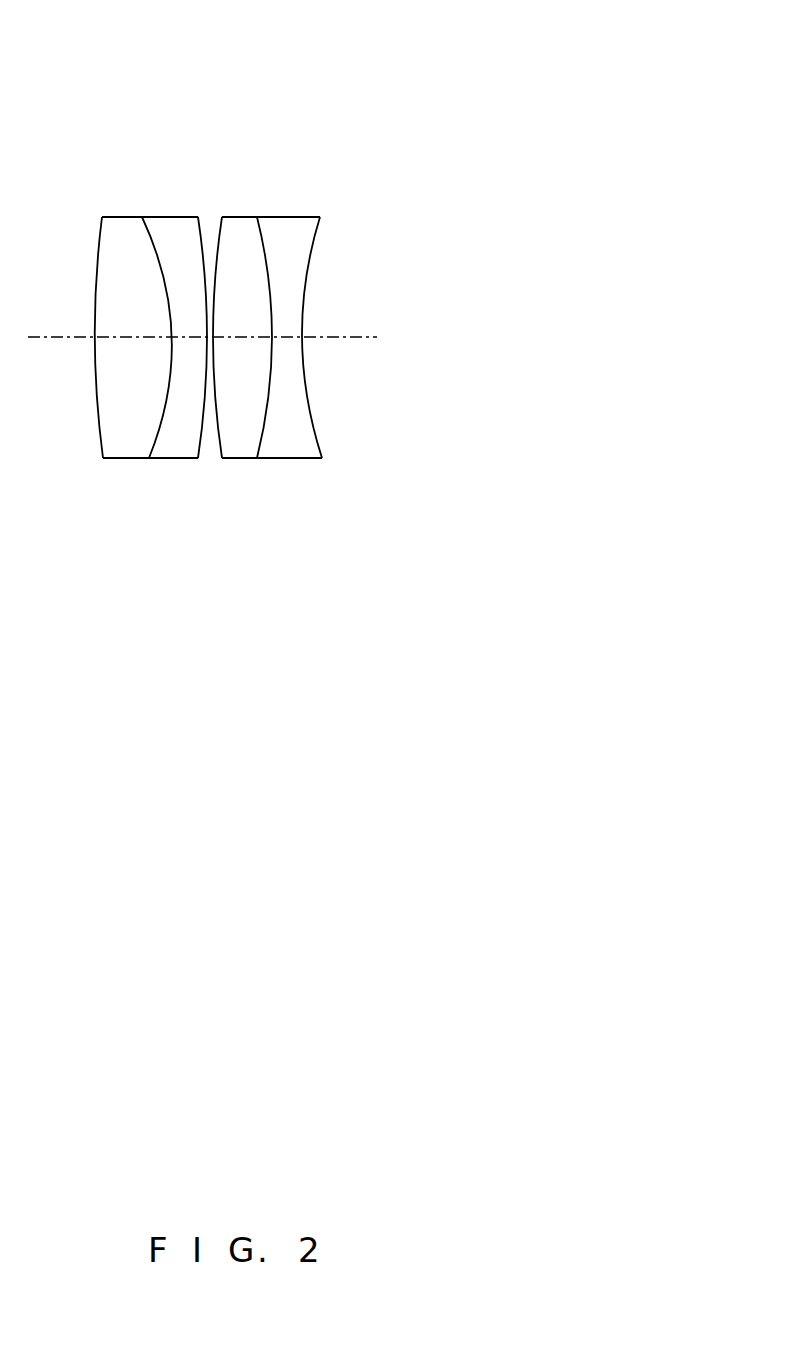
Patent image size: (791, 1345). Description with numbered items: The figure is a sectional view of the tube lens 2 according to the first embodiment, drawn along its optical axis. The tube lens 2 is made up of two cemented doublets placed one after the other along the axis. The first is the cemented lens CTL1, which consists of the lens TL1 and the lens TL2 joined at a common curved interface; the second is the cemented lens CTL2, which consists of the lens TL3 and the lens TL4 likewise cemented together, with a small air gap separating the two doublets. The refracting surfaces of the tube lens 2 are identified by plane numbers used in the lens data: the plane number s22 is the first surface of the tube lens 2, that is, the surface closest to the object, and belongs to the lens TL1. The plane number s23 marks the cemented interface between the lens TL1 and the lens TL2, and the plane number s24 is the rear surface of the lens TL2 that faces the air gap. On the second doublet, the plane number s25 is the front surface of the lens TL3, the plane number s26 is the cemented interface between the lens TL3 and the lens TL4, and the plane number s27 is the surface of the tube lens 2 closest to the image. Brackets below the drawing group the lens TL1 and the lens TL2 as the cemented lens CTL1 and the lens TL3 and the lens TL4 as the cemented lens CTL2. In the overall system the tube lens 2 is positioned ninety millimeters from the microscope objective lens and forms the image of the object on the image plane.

The tube lens 2 is at (472, 36).
The cemented lens CTL1 is at (198, 558).
The cemented lens CTL2 is at (315, 558).
The lens TL1 is at (130, 435).
The lens TL2 is at (182, 435).
The lens TL3 is at (248, 435).
The lens TL4 is at (295, 435).
The plane number s22 is at (100, 240).
The plane number s23 is at (152, 242).
The plane number s24 is at (200, 238).
The plane number s25 is at (218, 238).
The plane number s26 is at (260, 238).
The plane number s27 is at (314, 238).